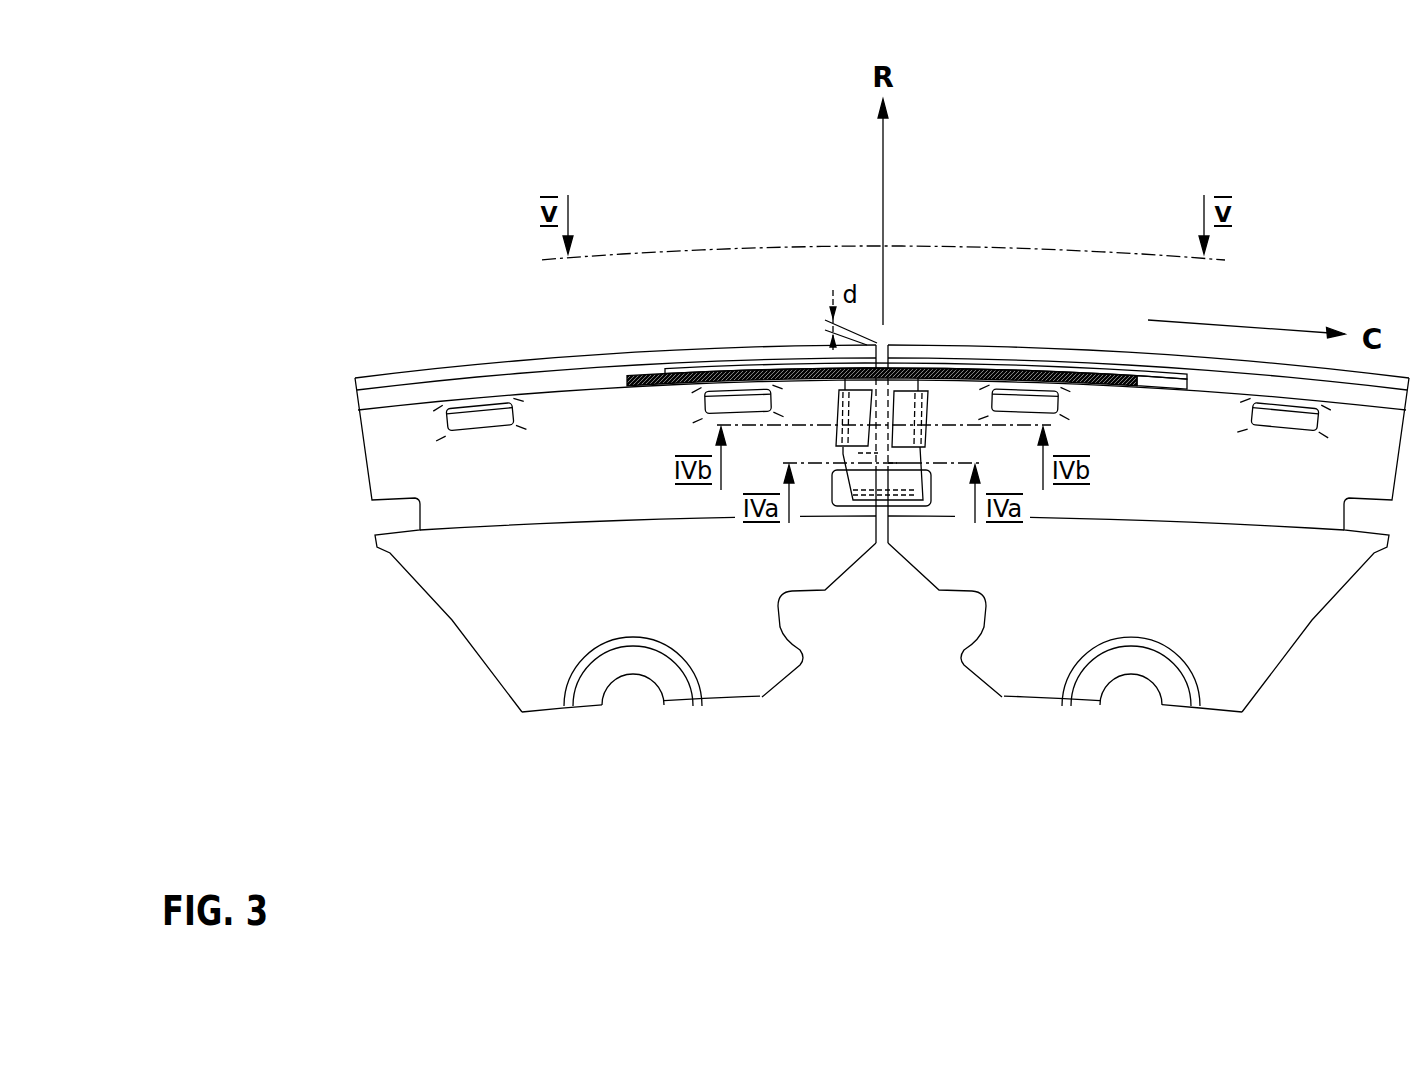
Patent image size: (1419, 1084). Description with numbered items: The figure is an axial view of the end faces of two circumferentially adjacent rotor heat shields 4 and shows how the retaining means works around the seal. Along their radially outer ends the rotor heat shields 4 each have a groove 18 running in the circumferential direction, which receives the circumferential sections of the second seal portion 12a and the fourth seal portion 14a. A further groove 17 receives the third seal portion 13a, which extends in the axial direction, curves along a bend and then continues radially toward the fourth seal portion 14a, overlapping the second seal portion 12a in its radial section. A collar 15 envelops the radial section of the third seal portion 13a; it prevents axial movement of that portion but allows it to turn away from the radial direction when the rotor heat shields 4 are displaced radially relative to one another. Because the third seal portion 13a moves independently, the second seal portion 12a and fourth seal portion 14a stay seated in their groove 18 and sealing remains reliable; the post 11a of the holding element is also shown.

The rotor heat shield 4 is at (1210, 818).
The post of the holding element 11a is at (883, 506).
The second seal portion 12a is at (778, 370).
The third seal portion 13a is at (899, 477).
The fourth seal portion 14a is at (645, 366).
The collar 15 is at (907, 410).
The groove 17 is at (842, 490).
The groove 18 is at (1268, 387).